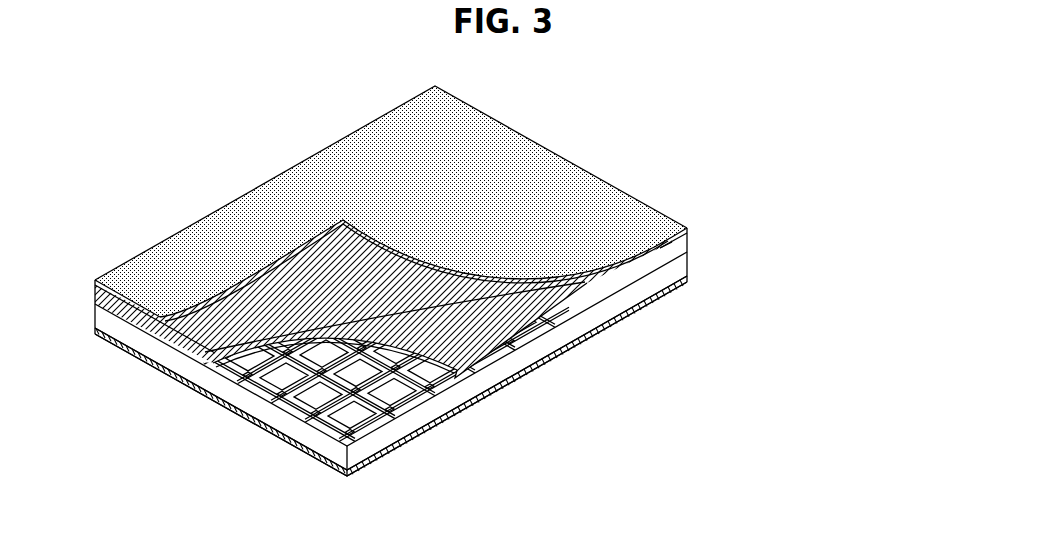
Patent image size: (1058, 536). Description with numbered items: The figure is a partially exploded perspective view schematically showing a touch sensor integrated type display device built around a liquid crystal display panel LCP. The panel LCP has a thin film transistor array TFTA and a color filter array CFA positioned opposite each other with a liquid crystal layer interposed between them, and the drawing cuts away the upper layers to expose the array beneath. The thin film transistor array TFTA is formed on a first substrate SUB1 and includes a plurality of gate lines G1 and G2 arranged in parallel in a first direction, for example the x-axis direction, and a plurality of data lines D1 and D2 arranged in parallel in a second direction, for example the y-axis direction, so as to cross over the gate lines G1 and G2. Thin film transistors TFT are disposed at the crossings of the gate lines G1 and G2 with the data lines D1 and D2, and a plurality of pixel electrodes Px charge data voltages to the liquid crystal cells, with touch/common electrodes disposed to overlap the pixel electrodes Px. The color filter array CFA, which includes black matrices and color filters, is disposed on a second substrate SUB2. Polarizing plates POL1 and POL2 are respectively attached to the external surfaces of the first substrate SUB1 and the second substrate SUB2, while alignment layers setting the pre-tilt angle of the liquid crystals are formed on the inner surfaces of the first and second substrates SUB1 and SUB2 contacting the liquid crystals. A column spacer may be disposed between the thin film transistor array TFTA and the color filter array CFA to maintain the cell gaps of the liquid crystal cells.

The liquid crystal display panel LCP is at (847, 233).
The color filter array CFA is at (785, 222).
The thin film transistor array TFTA is at (523, 364).
The polarizing plate POL2 is at (689, 231).
The second substrate SUB2 is at (689, 243).
The first substrate SUB1 is at (689, 258).
The polarizing plate POL1 is at (689, 277).
The gate line G1 is at (407, 432).
The gate line G2 is at (447, 408).
The data line D1 is at (290, 430).
The data line D2 is at (260, 408).
The pixel electrode Px is at (325, 452).
The thin film transistor TFT is at (241, 393).